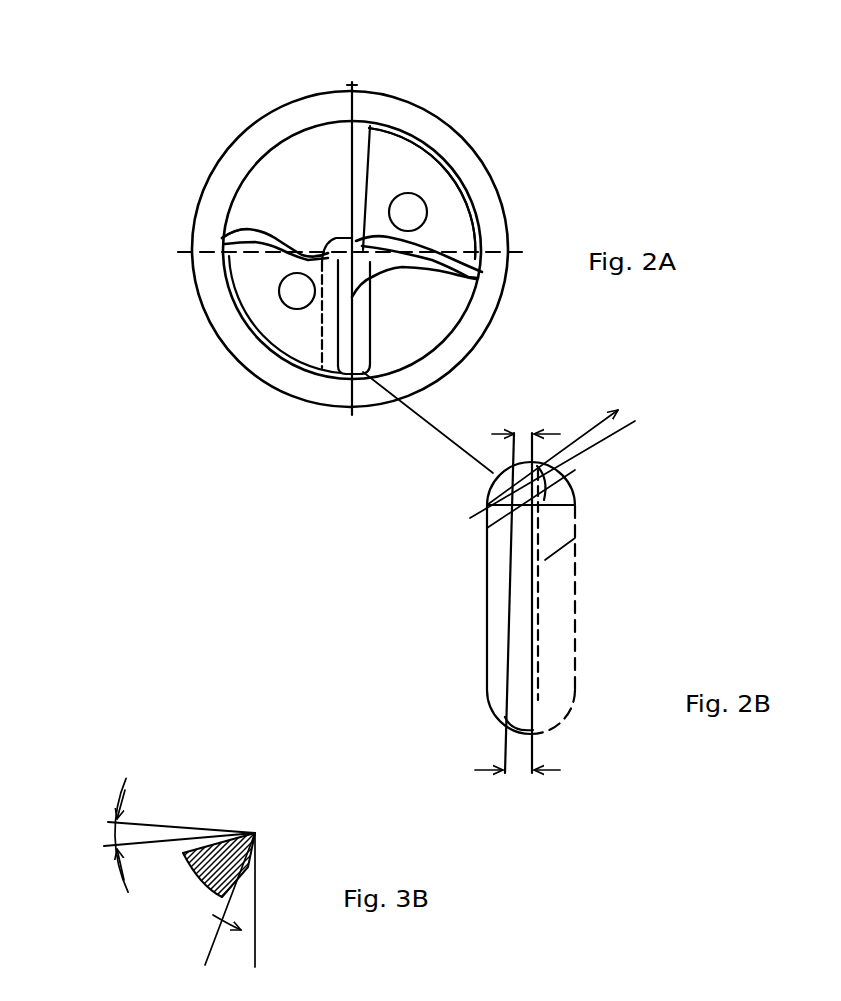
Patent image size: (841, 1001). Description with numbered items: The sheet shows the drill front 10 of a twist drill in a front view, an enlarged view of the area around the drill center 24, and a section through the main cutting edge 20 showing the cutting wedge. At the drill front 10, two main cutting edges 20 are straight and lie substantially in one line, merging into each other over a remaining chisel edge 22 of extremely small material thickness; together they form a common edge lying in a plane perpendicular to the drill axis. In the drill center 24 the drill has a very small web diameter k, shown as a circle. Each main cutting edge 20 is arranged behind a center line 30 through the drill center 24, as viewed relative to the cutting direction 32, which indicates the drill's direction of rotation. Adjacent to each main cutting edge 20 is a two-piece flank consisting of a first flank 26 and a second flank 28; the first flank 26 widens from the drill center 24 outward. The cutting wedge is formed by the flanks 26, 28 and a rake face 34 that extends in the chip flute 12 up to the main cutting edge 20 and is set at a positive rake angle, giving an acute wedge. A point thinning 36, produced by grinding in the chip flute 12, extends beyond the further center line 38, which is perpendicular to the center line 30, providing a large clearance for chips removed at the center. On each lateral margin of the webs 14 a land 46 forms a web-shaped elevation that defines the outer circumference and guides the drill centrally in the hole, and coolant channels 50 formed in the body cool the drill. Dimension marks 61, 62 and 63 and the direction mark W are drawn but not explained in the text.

In FIG. 2A, the drill front 10 is at (506, 131).
In FIG. 2B, the drill front 10 is at (484, 588).
In FIG. 2A, the chip flute 12 is at (262, 173).
In FIG. 2A, the web 14 is at (460, 219).
In FIG. 2A, the main cutting edge 20 is at (346, 178).
In FIG. 2B, the main cutting edge 20 is at (470, 518).
In FIG. 2A, the remaining chisel edge 22 is at (485, 287).
In FIG. 2B, the remaining chisel edge 22 is at (575, 505).
In FIG. 2B, the drill center 24 is at (537, 523).
In FIG. 2A, the first flank 26 is at (323, 377).
In FIG. 3B, the first flank 26 is at (258, 845).
In FIG. 2A, the second flank 28 is at (278, 320).
In FIG. 3B, the second flank 28 is at (252, 893).
In FIG. 2A, the center line 30 is at (353, 413).
In FIG. 2A, the cutting direction 32 is at (320, 44).
In FIG. 2B, the cutting direction 32 is at (543, 822).
In FIG. 3B, the rake face 34 is at (254, 831).
In FIG. 2A, the point thinning 36 is at (309, 232).
In FIG. 2A, the further center line 38 is at (200, 252).
In FIG. 2A, the land 46 is at (362, 125).
In FIG. 2A, the coolant channel 50 is at (286, 296).
In FIG. 2B, the blade width dimension 61 is at (550, 432).
In FIG. 2B, the blade thickness dimension 62 is at (548, 776).
In FIG. 3B, the axial direction 63 is at (260, 966).
In FIG. 2B, the web diameter k is at (644, 424).
In FIG. 3B, the cutting direction W is at (172, 996).